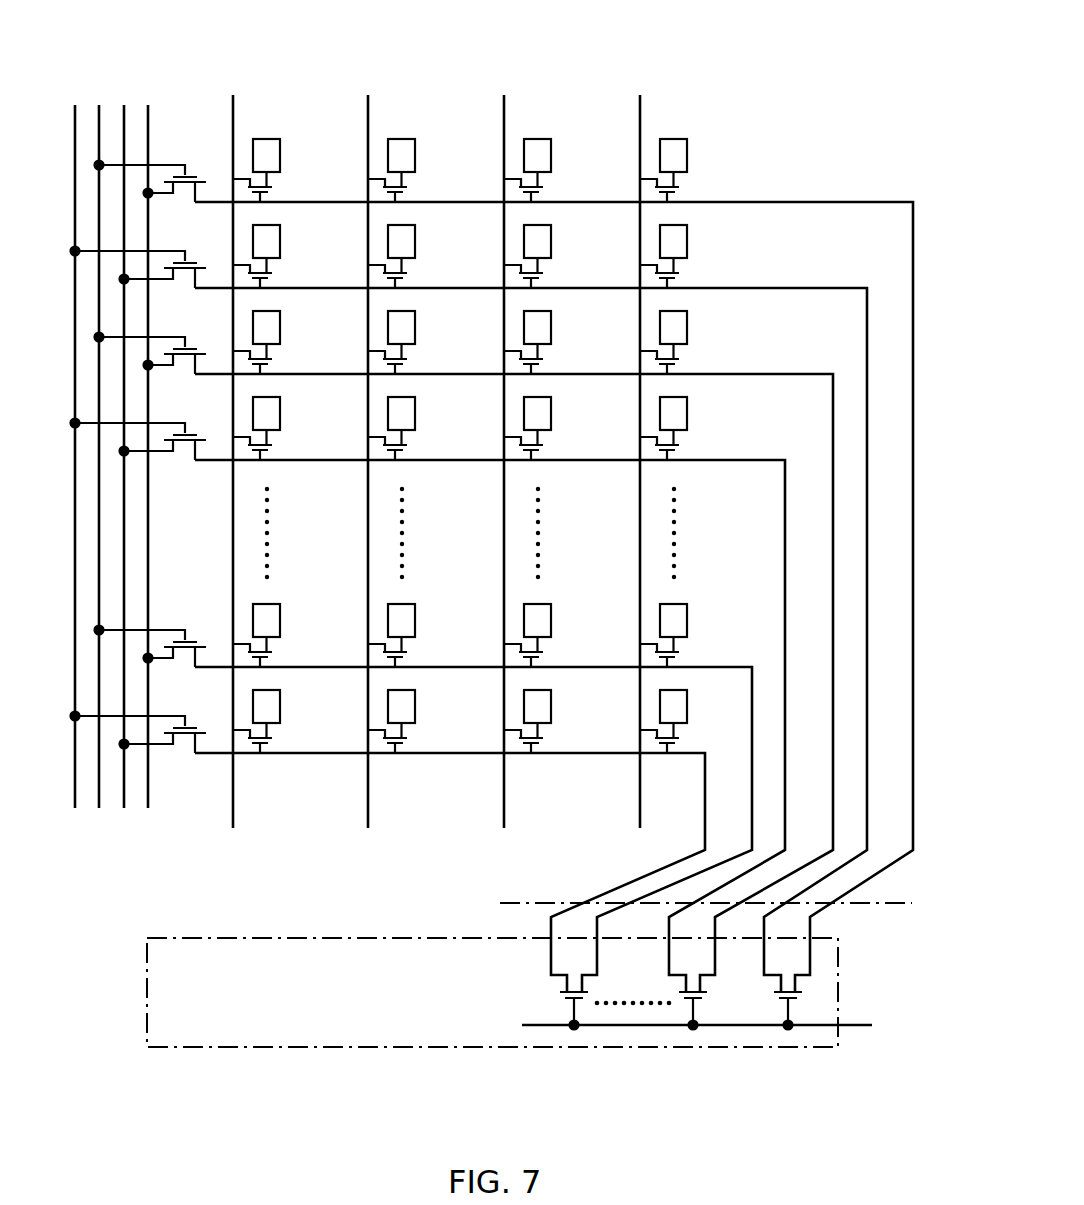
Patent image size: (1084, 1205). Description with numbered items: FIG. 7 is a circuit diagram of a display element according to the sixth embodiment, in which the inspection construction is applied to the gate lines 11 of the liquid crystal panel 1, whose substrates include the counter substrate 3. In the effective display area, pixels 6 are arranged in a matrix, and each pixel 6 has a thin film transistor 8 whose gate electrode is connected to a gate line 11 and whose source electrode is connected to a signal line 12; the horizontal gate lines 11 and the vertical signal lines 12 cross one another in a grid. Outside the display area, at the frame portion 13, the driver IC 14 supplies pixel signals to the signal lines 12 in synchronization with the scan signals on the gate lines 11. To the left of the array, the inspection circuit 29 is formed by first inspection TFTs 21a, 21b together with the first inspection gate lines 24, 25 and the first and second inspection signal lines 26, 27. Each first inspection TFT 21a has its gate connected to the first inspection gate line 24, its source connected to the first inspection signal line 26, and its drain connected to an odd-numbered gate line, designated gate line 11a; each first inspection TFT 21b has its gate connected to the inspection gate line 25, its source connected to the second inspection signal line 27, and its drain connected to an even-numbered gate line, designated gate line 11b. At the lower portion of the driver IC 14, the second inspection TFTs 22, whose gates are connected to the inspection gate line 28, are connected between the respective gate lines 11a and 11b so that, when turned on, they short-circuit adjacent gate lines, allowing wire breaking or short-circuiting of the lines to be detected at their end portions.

The liquid crystal panel 1 is at (514, 52).
The counter substrate 3 is at (876, 904).
The pixel 6 is at (487, 425).
The thin film transistor 8 is at (477, 461).
The gate line 11 is at (554, 570).
The gate line 11a is at (785, 287).
The gate line 11b is at (788, 201).
The signal line 12 is at (232, 107).
The frame portion 13 is at (870, 948).
The driver IC 14 is at (455, 1048).
The first inspection TFT 21a is at (182, 283).
The first inspection TFT 21b is at (182, 197).
The second inspection TFT 22 is at (565, 1000).
The first inspection gate line 24 is at (75, 808).
The first inspection gate line 25 is at (99, 808).
The first inspection signal line 26 is at (124, 808).
The second inspection signal line 27 is at (148, 808).
The inspection gate line 28 is at (615, 1027).
The inspection circuit 29 is at (126, 88).